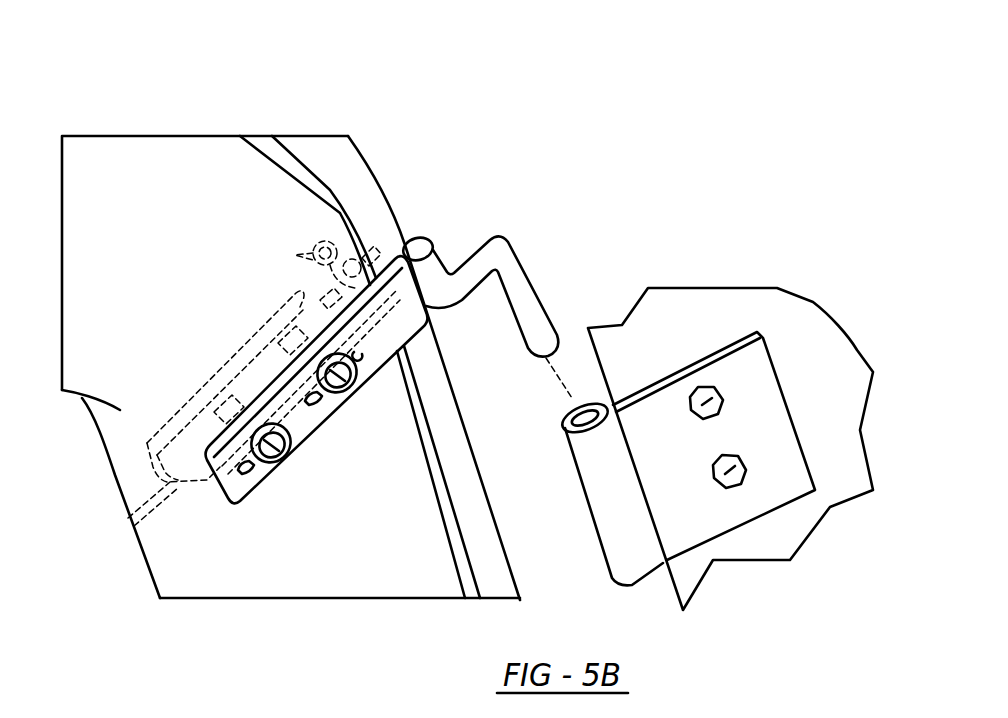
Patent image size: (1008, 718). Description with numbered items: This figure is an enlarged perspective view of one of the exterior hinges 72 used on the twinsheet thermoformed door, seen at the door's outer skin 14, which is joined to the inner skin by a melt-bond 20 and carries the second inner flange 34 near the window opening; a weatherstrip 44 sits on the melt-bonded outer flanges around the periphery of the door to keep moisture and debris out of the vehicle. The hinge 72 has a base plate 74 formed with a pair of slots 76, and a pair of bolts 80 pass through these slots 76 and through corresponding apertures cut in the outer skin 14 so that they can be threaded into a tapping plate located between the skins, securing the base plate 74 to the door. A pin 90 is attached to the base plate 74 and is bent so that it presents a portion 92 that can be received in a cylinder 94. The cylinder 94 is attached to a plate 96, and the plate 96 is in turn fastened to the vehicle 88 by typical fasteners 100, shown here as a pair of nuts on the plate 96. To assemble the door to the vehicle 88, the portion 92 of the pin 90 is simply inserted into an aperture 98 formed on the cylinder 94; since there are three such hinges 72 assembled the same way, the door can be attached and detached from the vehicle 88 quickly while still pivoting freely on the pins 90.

The outer skin 14 is at (170, 167).
The melt-bond 20 is at (130, 518).
The second inner flange 34 is at (82, 398).
The weatherstrip 44 is at (368, 198).
The exterior hinge 72 is at (549, 192).
The base plate 74 is at (402, 318).
The slots 76 is at (358, 350).
The bolts 80 is at (353, 383).
The vehicle 88 is at (715, 408).
The pin 90 is at (512, 298).
The portion 92 is at (530, 277).
The cylinder 94 is at (623, 555).
The plate 96 is at (855, 350).
The aperture 98 is at (570, 398).
The fasteners 100 is at (690, 403).